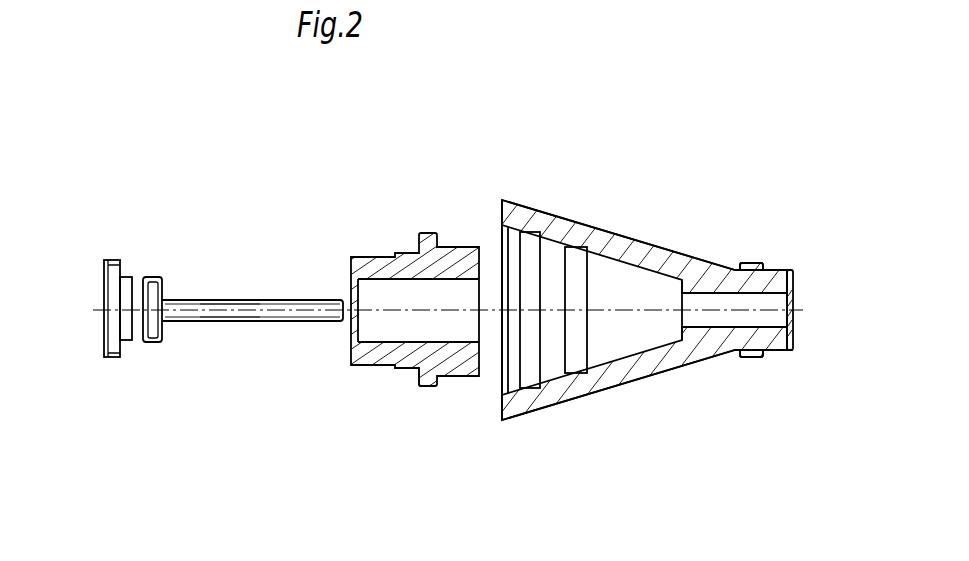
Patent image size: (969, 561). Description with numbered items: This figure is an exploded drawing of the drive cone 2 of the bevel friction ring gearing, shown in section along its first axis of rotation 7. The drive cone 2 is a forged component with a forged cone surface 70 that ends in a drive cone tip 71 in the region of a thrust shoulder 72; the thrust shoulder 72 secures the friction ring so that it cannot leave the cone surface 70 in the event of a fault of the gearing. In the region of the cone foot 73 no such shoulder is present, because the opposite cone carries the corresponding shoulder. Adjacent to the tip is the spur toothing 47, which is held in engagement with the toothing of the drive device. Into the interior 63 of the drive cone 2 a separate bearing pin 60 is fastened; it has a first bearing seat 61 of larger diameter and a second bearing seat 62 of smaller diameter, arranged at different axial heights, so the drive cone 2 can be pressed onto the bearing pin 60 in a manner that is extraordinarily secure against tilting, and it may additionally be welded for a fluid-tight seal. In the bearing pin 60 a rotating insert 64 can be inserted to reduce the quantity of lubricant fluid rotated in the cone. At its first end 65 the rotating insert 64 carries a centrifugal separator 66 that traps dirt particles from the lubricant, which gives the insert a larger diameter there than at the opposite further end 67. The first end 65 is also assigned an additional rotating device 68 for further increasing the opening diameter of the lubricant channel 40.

The drive cone 2 is at (607, 237).
The first axis of rotation 7 is at (722, 312).
The lubricant channel 40 is at (233, 312).
The spur toothing 47 is at (796, 277).
The separate bearing pin 60 is at (385, 267).
The first bearing seat 61 is at (427, 390).
The second bearing seat 62 is at (470, 384).
The interior 63 is at (605, 330).
The rotating insert 64 is at (185, 300).
The first end 65 is at (150, 228).
The centrifugal separator 66 is at (152, 343).
The further end 67 is at (336, 292).
The additional rotating device 68 is at (108, 372).
The cone surface 70 is at (640, 237).
The drive cone tip 71 is at (783, 383).
The thrust shoulder 72 is at (747, 262).
The cone foot 73 is at (505, 183).